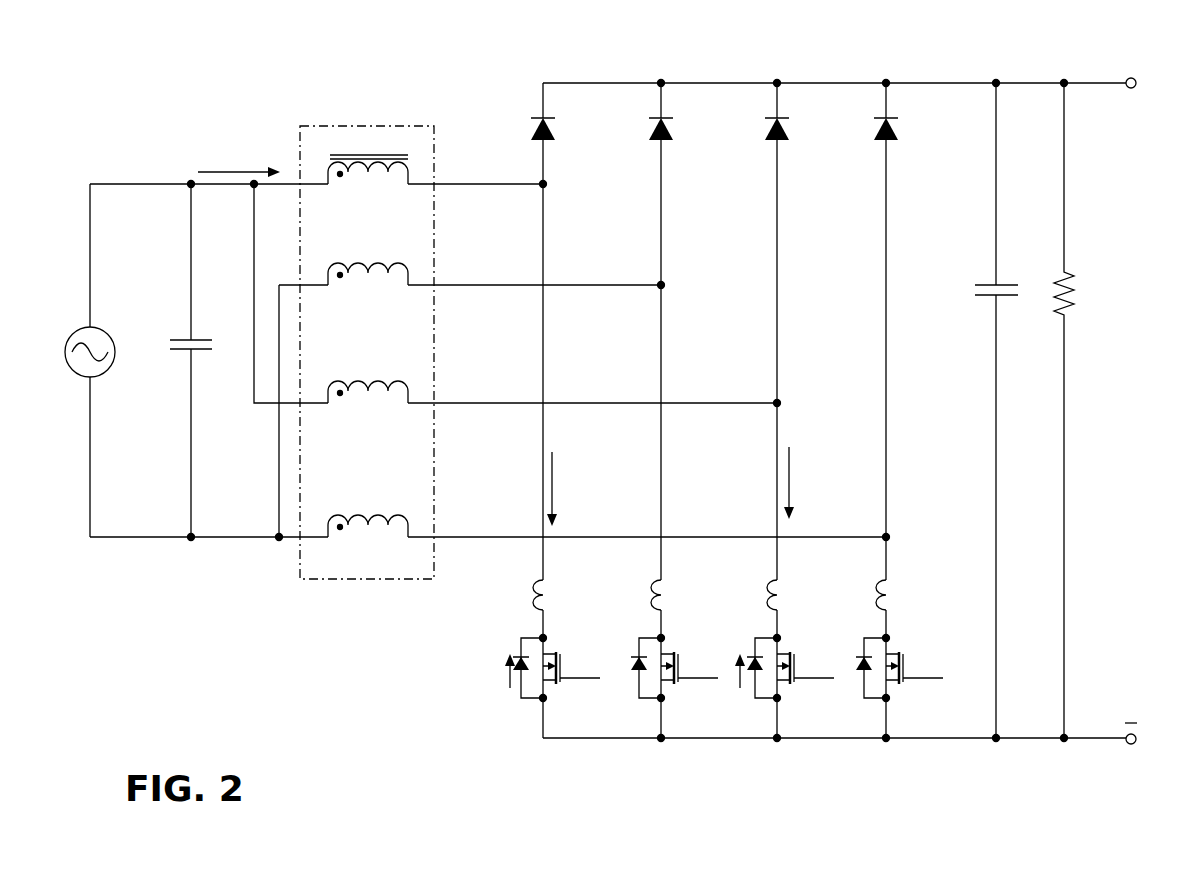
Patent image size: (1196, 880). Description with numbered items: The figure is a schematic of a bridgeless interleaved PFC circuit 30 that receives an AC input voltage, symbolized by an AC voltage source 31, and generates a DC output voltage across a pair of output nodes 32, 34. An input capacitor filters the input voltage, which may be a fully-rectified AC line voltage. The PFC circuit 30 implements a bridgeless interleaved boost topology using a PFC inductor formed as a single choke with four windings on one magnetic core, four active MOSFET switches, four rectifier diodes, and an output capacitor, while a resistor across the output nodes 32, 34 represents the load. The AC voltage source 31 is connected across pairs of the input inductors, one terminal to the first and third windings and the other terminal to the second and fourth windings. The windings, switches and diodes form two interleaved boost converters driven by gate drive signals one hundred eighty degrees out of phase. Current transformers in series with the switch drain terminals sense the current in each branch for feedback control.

The bridgeless interleaved PFC circuit 30 is at (178, 96).
The AC voltage source 31 is at (80, 375).
The output node 32 is at (1078, 83).
The output node 34 is at (1030, 740).